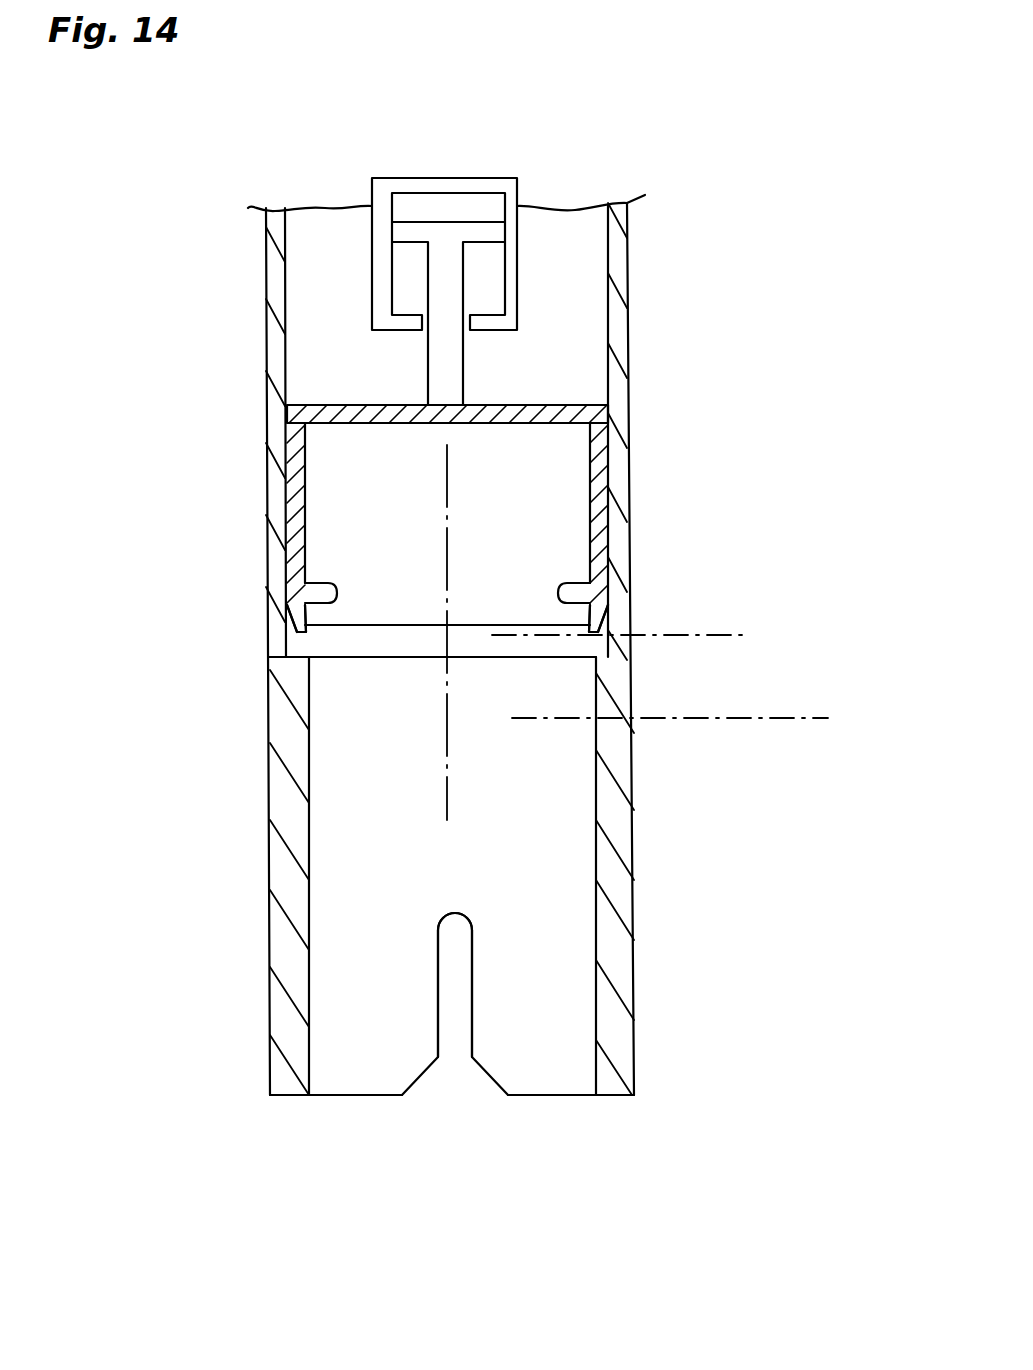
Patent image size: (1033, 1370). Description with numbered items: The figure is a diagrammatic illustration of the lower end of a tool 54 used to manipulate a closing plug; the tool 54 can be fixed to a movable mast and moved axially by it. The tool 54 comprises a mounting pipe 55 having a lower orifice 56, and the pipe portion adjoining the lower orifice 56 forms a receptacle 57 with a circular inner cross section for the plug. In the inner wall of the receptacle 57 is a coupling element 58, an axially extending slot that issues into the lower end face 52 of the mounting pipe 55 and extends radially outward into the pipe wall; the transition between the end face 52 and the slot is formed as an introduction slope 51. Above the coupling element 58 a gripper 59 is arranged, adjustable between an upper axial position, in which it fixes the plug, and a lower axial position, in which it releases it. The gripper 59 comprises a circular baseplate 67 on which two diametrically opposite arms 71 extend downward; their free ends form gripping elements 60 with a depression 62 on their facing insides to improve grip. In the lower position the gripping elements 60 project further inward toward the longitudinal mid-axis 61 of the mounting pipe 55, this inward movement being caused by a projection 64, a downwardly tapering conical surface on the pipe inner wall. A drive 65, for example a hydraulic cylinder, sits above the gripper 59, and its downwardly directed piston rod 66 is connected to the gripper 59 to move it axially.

The introduction slope 51 is at (423, 1078).
The lower end face 52 is at (567, 1095).
The tool 54 is at (676, 545).
The mounting pipe 55 is at (624, 334).
The lower orifice 56 is at (313, 1088).
The receptacle 57 is at (271, 1088).
The coupling element 58 is at (472, 984).
The gripper 59 is at (334, 392).
The gripping element 60 is at (267, 597).
The longitudinal mid-axis 61 is at (447, 783).
The depression 62 is at (300, 583).
The projection 64 is at (316, 641).
The drive 65 is at (488, 170).
The piston rod 66 is at (453, 366).
The baseplate 67 is at (464, 496).
The arm 71 is at (284, 484).